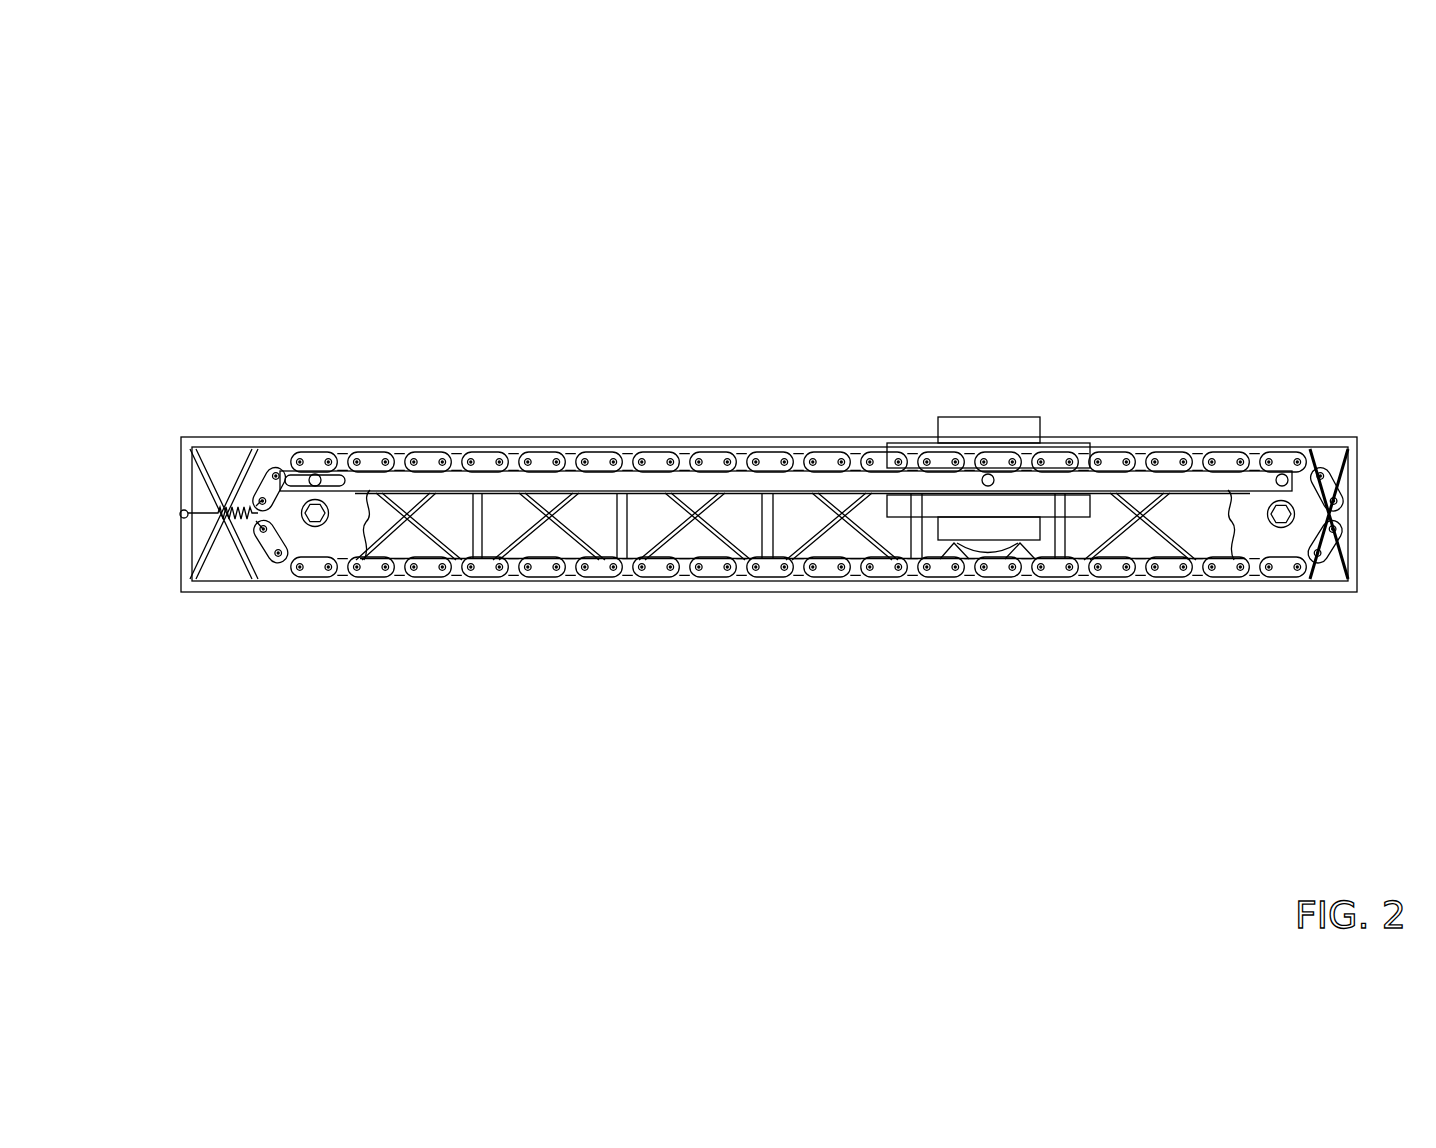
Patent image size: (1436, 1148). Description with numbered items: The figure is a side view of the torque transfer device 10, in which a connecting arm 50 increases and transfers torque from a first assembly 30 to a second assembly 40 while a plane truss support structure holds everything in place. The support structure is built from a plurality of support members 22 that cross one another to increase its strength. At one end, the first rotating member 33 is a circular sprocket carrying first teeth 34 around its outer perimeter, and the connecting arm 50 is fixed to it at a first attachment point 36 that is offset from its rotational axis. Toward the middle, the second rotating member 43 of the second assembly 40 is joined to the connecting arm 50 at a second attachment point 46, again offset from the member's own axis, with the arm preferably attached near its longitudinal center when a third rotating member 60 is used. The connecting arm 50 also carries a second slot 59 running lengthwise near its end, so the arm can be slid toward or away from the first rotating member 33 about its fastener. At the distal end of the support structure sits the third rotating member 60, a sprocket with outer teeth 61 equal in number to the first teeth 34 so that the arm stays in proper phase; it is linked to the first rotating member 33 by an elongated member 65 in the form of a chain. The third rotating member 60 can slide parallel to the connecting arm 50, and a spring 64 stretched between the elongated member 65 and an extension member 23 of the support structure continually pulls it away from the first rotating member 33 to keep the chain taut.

The torque transfer device 10 is at (265, 145).
The support members 22 is at (797, 592).
The extension member 23 is at (181, 520).
The first assembly 30 is at (786, 546).
The first rotating member 33 is at (1342, 497).
The first teeth 34 is at (1230, 553).
The first attachment point 36 is at (1277, 477).
The second assembly 40 is at (1003, 498).
The second rotating member 43 is at (985, 548).
The second attachment point 46 is at (967, 442).
The connecting arm 50 is at (806, 382).
The second slot 59 is at (343, 478).
The third rotating member 60 is at (300, 543).
The outer teeth 61 is at (362, 530).
The spring 64 is at (241, 508).
The elongated member 65 is at (653, 568).